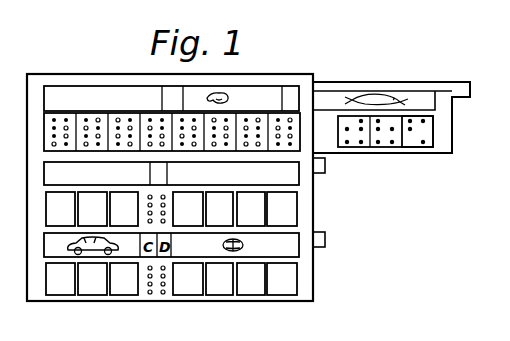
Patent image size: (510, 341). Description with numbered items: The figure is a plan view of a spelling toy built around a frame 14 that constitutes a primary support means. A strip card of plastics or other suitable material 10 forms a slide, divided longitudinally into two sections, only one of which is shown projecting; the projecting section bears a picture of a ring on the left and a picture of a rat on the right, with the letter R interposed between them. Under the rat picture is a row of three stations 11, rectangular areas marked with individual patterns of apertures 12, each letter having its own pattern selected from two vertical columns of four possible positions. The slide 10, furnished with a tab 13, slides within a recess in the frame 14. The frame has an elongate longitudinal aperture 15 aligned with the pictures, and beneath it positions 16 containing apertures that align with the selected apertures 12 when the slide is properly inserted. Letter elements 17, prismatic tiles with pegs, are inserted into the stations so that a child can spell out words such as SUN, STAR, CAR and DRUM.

The strip card 10 is at (447, 145).
The stations 11 is at (430, 125).
The apertures 12 is at (422, 148).
The tab 13 is at (464, 92).
The frame 14 is at (35, 82).
The elongate longitudinal aperture 15 is at (128, 97).
The positions 16 is at (95, 110).
The letter elements 17 is at (126, 291).